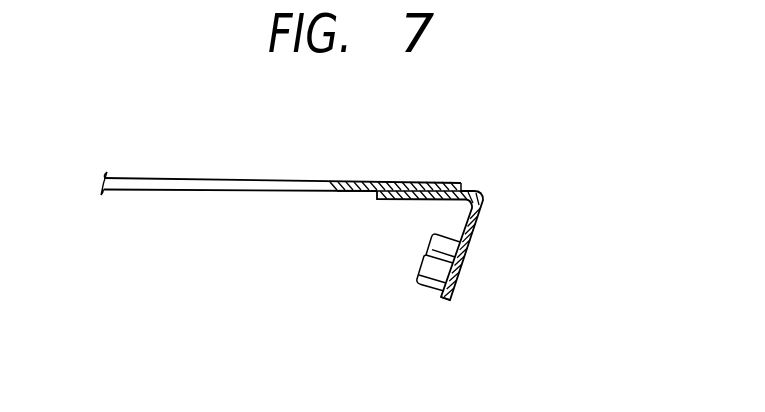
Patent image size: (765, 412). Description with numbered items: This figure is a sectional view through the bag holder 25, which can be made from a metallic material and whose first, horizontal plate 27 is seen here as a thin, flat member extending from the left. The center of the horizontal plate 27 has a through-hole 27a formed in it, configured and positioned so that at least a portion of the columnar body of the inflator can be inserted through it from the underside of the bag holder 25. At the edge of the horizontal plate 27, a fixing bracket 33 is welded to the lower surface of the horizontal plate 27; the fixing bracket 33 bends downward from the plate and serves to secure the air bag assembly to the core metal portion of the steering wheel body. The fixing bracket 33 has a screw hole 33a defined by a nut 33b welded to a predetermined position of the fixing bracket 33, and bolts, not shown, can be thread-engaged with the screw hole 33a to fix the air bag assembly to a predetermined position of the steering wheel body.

The bag holder 25 is at (488, 182).
The horizontal plate 27 is at (371, 183).
The through-hole 27a is at (333, 183).
The fixing bracket 33 is at (484, 220).
The screw hole 33a is at (457, 280).
The nut 33b is at (426, 257).